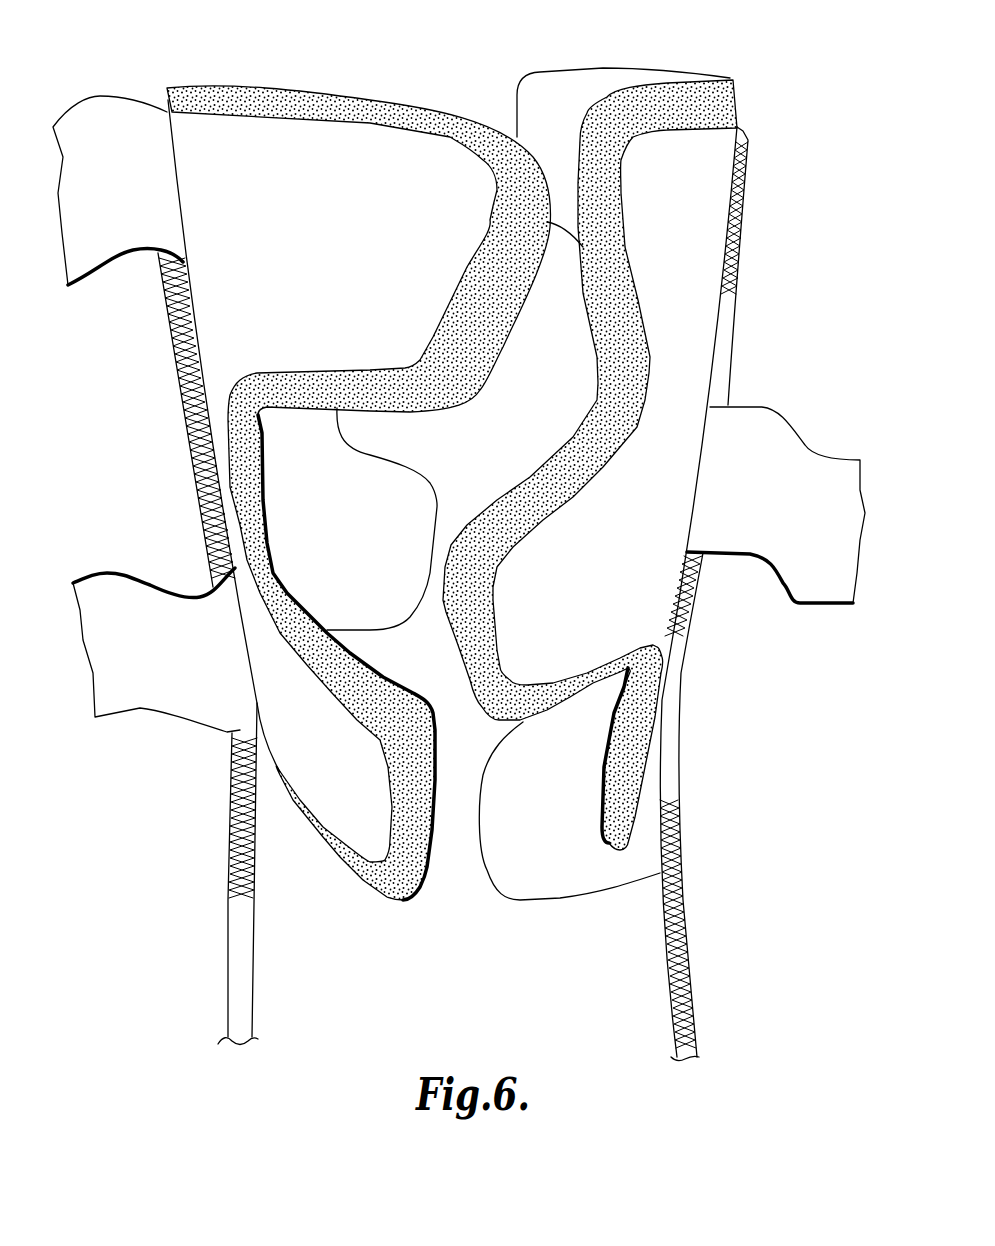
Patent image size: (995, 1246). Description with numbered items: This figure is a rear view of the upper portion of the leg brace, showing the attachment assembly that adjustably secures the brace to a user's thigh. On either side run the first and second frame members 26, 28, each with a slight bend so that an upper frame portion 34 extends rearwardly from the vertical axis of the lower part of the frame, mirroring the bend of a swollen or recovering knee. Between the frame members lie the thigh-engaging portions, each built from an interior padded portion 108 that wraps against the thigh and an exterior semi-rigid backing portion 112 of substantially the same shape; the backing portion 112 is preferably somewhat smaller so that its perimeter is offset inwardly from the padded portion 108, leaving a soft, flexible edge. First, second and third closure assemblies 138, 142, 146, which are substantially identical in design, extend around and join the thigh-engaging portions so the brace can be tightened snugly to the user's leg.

The first frame member 26 is at (210, 886).
The second frame member 28 is at (697, 912).
The upper frame portion 34 is at (745, 233).
The interior padded portion 108 is at (427, 117).
The exterior semi-rigid backing portion 112 is at (312, 153).
The first closure assembly 138 is at (94, 95).
The second closure assembly 142 is at (805, 426).
The third closure assembly 146 is at (142, 573).